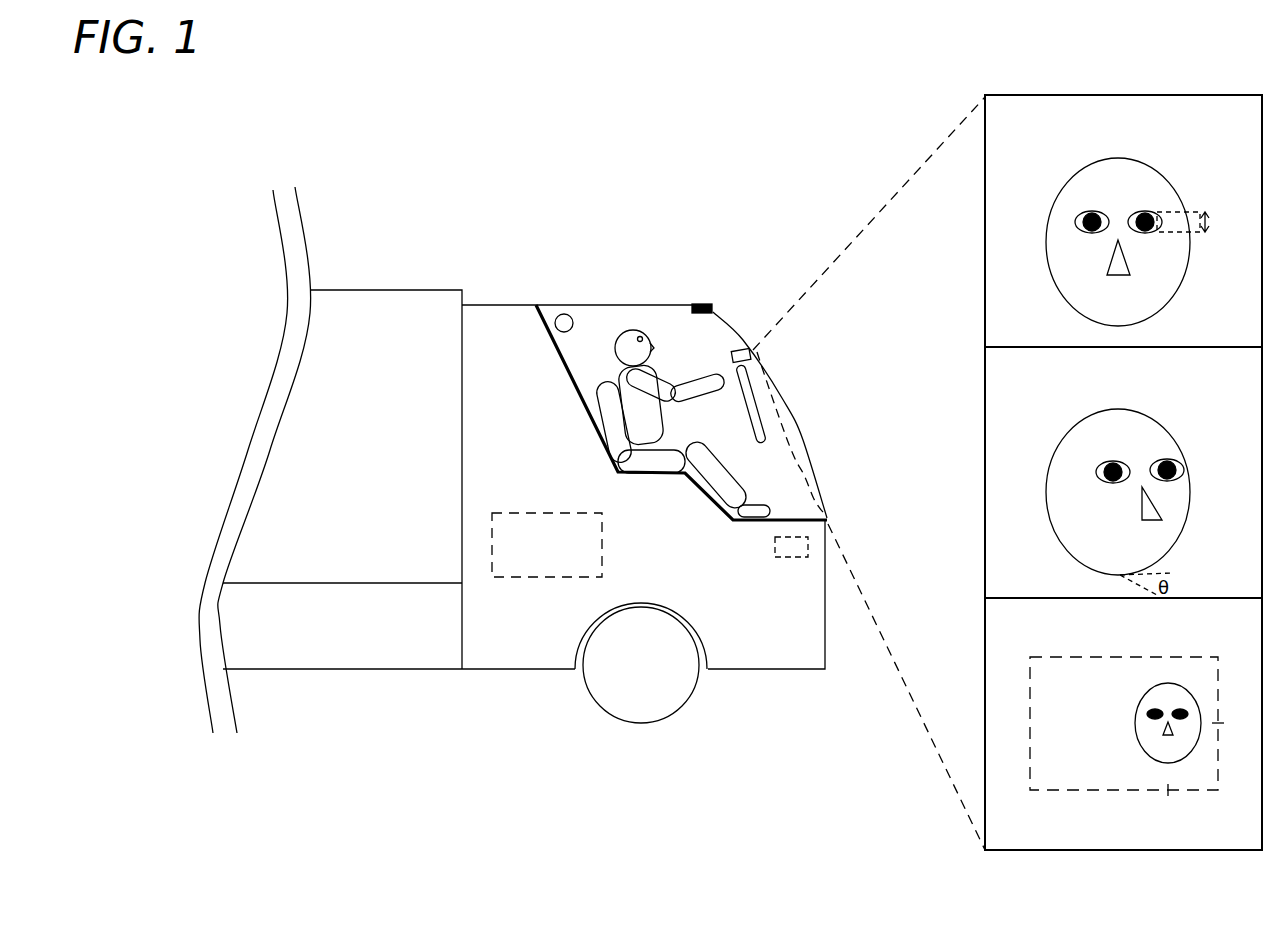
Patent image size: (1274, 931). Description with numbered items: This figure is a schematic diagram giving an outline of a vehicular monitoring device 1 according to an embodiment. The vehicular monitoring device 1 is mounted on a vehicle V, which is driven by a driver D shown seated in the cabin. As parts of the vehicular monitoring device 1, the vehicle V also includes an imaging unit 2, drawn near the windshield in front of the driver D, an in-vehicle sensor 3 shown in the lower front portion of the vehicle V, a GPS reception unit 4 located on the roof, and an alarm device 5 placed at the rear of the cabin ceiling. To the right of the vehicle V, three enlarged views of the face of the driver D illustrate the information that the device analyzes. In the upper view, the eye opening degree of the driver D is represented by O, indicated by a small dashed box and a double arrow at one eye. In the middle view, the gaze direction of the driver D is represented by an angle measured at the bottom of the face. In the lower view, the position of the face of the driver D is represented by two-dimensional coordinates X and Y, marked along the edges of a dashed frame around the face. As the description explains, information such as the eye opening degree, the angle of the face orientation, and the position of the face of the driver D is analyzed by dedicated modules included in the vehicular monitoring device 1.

The vehicle V is at (412, 290).
The vehicular monitoring device 1 is at (530, 513).
The imaging unit 2 is at (750, 350).
The in-vehicle sensor 3 is at (785, 558).
The GPS reception unit 4 is at (705, 303).
The alarm device 5 is at (565, 313).
The driver D is at (630, 330).
The eye opening degree O is at (1196, 223).
The face position X coordinate X is at (1167, 807).
The face position Y coordinate Y is at (1226, 724).